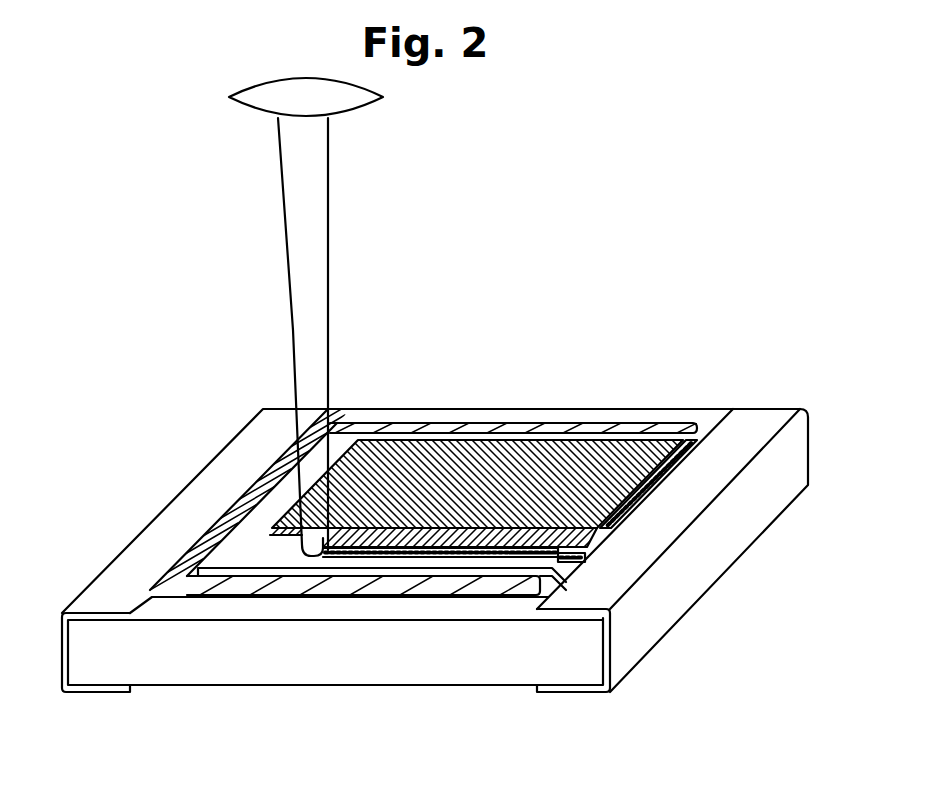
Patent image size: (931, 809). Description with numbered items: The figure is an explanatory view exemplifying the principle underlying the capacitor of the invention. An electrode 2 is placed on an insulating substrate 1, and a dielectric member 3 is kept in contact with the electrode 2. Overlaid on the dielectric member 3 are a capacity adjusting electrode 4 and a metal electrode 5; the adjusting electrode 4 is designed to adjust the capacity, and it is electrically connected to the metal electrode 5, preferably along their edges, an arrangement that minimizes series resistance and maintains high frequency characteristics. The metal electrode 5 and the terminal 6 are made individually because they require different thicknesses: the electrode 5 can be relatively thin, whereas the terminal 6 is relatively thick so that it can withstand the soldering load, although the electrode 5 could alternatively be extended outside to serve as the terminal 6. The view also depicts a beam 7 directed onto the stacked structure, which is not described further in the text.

The insulating substrate 1 is at (168, 653).
The electrode 2 is at (180, 575).
The dielectric member 3 is at (342, 441).
The capacity adjusting electrode 4 is at (353, 557).
The metal electrode 5 is at (433, 465).
The terminal 6 is at (760, 415).
The laser beam 7 is at (312, 207).